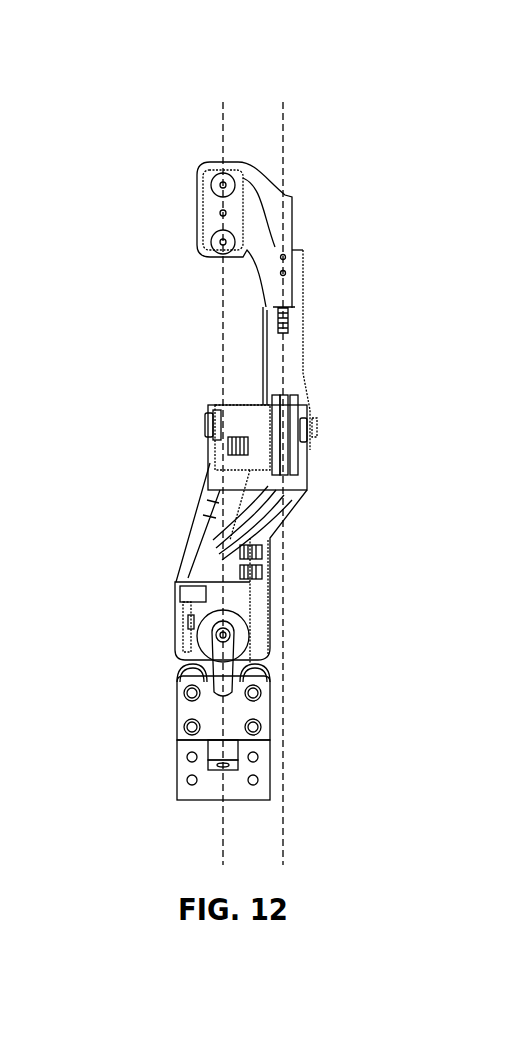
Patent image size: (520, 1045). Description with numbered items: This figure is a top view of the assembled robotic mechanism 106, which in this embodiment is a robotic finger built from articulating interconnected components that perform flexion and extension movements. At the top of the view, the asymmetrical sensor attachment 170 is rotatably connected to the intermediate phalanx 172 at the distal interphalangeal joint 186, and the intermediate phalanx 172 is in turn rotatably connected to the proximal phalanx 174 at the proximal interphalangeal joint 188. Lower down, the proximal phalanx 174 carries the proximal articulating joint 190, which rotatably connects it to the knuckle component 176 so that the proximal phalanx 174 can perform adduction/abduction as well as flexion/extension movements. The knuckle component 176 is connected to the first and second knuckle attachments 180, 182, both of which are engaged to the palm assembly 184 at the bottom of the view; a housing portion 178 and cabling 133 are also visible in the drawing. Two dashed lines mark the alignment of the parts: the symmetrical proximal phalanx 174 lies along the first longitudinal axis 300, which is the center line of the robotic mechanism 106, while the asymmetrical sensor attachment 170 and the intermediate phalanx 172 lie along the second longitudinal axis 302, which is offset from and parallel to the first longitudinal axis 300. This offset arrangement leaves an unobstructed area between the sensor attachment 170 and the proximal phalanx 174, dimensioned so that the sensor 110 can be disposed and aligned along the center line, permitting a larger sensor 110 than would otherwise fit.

The robotic mechanism 106 is at (362, 217).
The sensor 110 is at (223, 235).
The cables 133 is at (276, 513).
The asymmetrical sensor attachment 170 is at (247, 210).
The intermediate phalanx 172 is at (343, 350).
The proximal phalanx 174 is at (181, 511).
The knuckle component 176 is at (249, 639).
The lower housing 178 is at (228, 593).
The first knuckle attachment 180 is at (216, 720).
The second knuckle attachment 182 is at (178, 668).
The palm assembly 184 is at (262, 768).
The distal interphalangeal joint 186 is at (297, 283).
The proximal interphalangeal joint 188 is at (290, 424).
The proximal articulating joint 190 is at (172, 622).
The first longitudinal axis 300 is at (222, 138).
The second longitudinal axis 302 is at (286, 152).